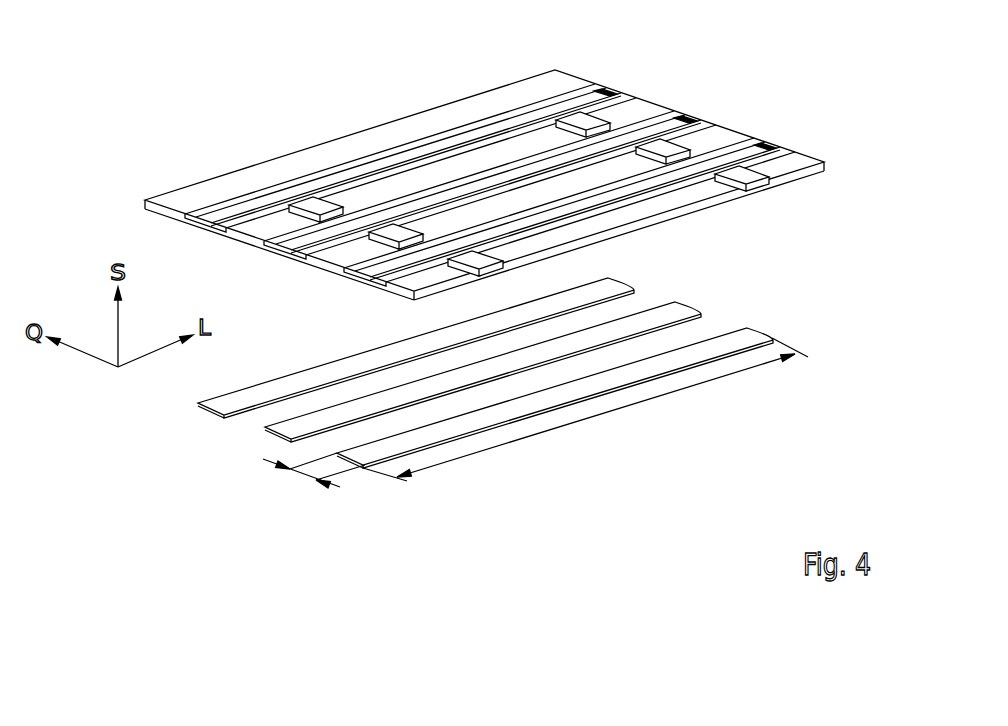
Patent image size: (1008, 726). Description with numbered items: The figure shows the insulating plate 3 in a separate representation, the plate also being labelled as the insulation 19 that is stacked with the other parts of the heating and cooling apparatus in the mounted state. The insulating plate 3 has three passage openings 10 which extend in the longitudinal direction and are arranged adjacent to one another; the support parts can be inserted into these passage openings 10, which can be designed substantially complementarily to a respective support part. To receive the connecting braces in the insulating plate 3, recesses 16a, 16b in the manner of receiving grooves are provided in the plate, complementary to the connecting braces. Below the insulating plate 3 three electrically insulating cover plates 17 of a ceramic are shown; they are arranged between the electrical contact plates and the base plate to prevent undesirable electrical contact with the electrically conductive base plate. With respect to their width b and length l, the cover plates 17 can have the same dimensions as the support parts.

The insulating plate 3 is at (516, 183).
The insulation 19 is at (790, 143).
The passage openings 10 is at (570, 110).
The recess 16a is at (585, 124).
The recess 16b is at (312, 212).
The cover plates 17 is at (670, 310).
The length l is at (602, 414).
The width b is at (302, 473).